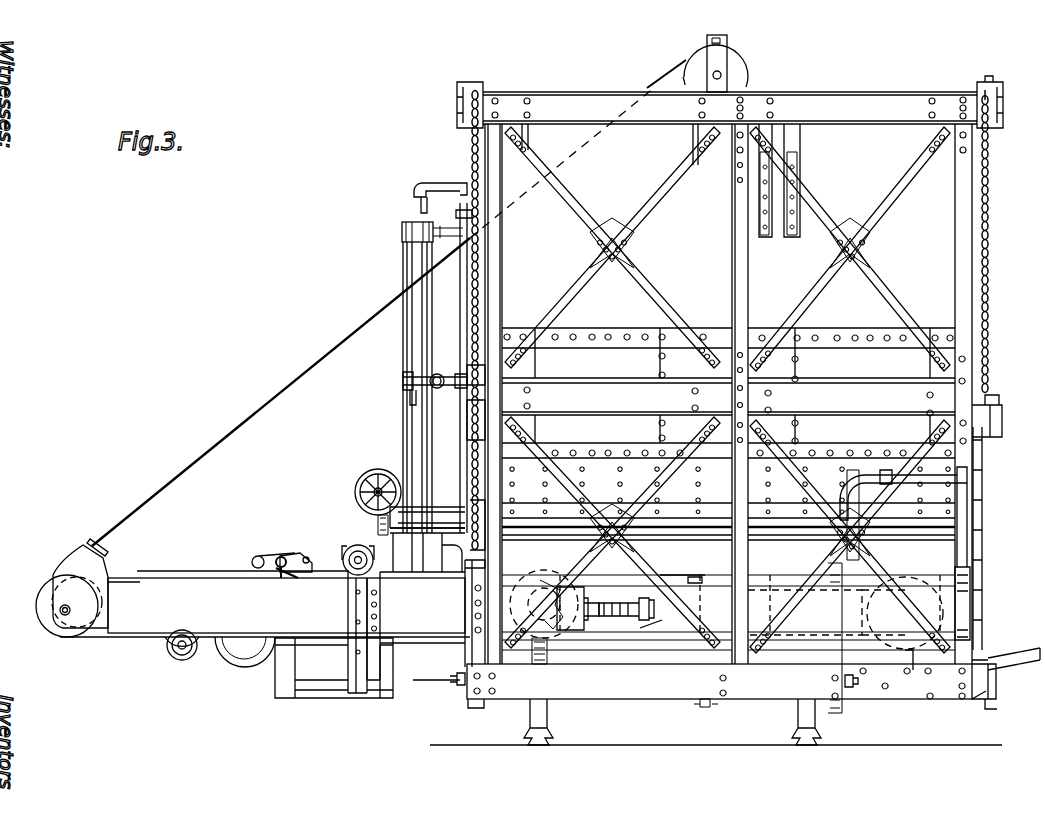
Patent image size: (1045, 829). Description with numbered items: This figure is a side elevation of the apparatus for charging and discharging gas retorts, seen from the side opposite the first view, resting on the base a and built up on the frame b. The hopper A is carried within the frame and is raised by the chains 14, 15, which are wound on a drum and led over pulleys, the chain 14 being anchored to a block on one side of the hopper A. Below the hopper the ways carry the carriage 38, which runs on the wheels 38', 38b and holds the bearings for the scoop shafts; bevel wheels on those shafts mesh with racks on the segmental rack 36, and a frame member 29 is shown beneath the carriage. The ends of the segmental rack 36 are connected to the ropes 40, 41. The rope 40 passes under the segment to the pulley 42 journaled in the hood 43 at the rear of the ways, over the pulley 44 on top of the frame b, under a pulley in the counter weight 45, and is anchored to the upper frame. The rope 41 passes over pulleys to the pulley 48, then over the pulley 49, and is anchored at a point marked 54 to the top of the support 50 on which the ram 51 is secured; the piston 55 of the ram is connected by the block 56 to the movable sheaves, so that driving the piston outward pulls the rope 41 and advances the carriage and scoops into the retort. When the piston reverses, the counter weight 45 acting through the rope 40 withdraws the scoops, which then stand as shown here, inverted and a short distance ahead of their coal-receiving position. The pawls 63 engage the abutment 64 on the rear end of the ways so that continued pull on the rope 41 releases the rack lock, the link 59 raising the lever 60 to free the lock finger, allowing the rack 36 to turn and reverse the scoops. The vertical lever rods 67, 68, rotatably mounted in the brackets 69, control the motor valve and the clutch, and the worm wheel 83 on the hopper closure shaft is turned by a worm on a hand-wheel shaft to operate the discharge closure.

The chain 14 is at (990, 292).
The chain 15 is at (480, 285).
The frame block 29 is at (335, 690).
The segmental rack 36 is at (237, 648).
The carriage 38 is at (265, 591).
The wheel 38' is at (348, 544).
The wheel 38b is at (184, 660).
The rope 40 is at (365, 322).
The rope 41 is at (452, 643).
The pulley 42 is at (70, 635).
The hood 43 is at (80, 565).
The pulley 44 is at (740, 72).
The counter weight 45 is at (797, 235).
The pulley 48 is at (905, 655).
The pulley 49 is at (540, 580).
The support 50 is at (845, 613).
The ram 51 is at (660, 620).
The bar 54 is at (702, 577).
The piston 55 is at (626, 600).
The block 56 is at (569, 605).
The link 59 is at (292, 576).
The lever 60 is at (290, 560).
The pawl 63 is at (258, 560).
The abutment 64 is at (282, 579).
The lever rod 67 is at (403, 330).
The lever rod 68 is at (428, 310).
The bracket 69 is at (402, 234).
The worm wheel 83 is at (360, 496).
The hopper A is at (606, 357).
The base a is at (732, 684).
The frame b is at (962, 258).